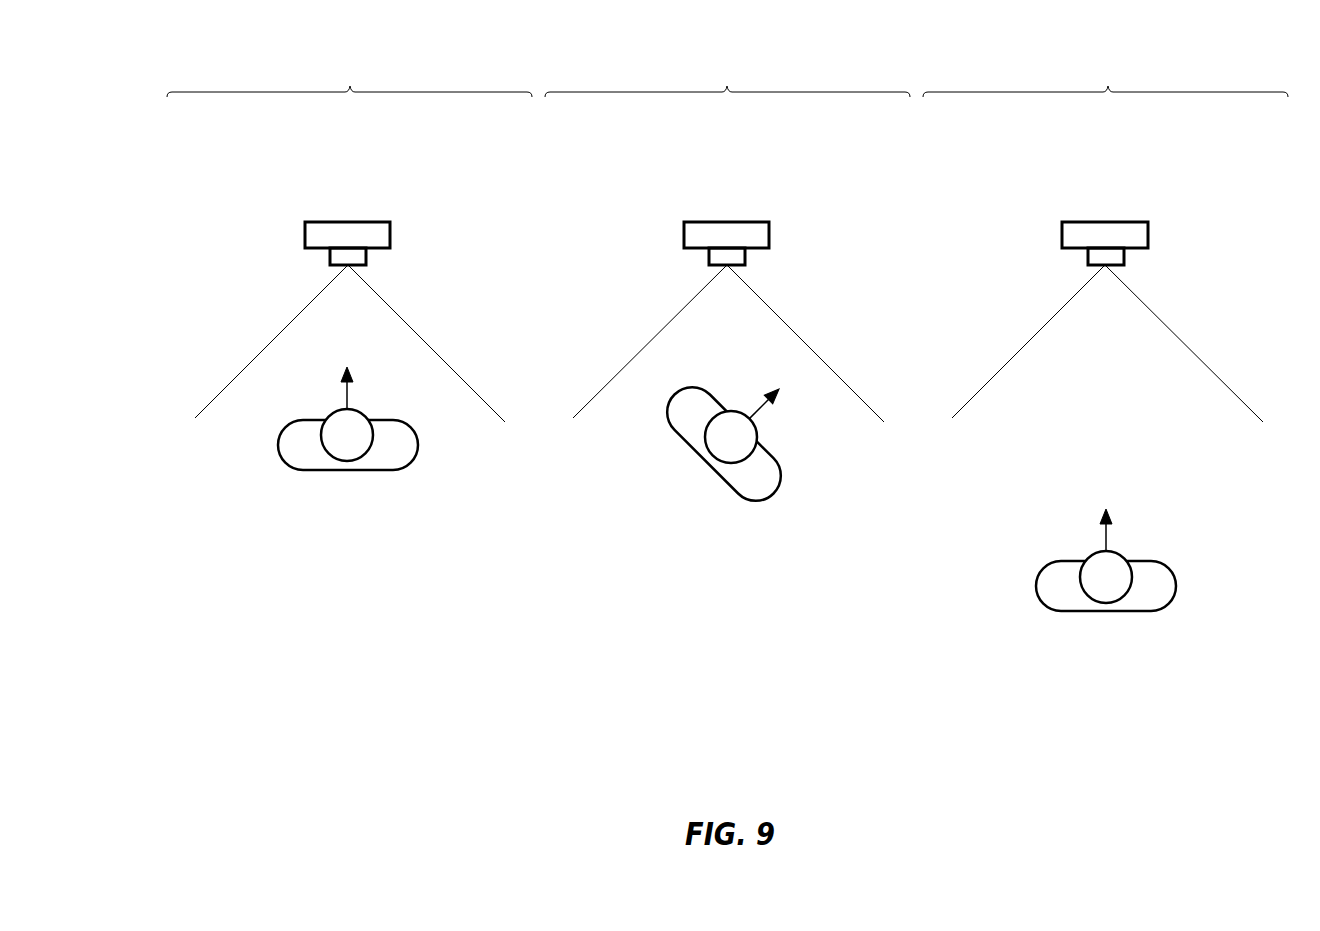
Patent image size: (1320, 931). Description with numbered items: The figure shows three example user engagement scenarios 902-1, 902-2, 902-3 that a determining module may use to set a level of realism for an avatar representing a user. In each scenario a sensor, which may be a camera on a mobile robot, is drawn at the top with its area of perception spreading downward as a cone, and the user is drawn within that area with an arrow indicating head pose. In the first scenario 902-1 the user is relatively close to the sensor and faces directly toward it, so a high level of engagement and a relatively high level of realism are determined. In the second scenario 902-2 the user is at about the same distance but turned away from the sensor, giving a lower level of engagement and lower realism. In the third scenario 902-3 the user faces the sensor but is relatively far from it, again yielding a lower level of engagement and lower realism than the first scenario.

The user engagement scenario 902-1 is at (349, 76).
The user engagement scenario 902-2 is at (727, 76).
The user engagement scenario 902-3 is at (1105, 76).